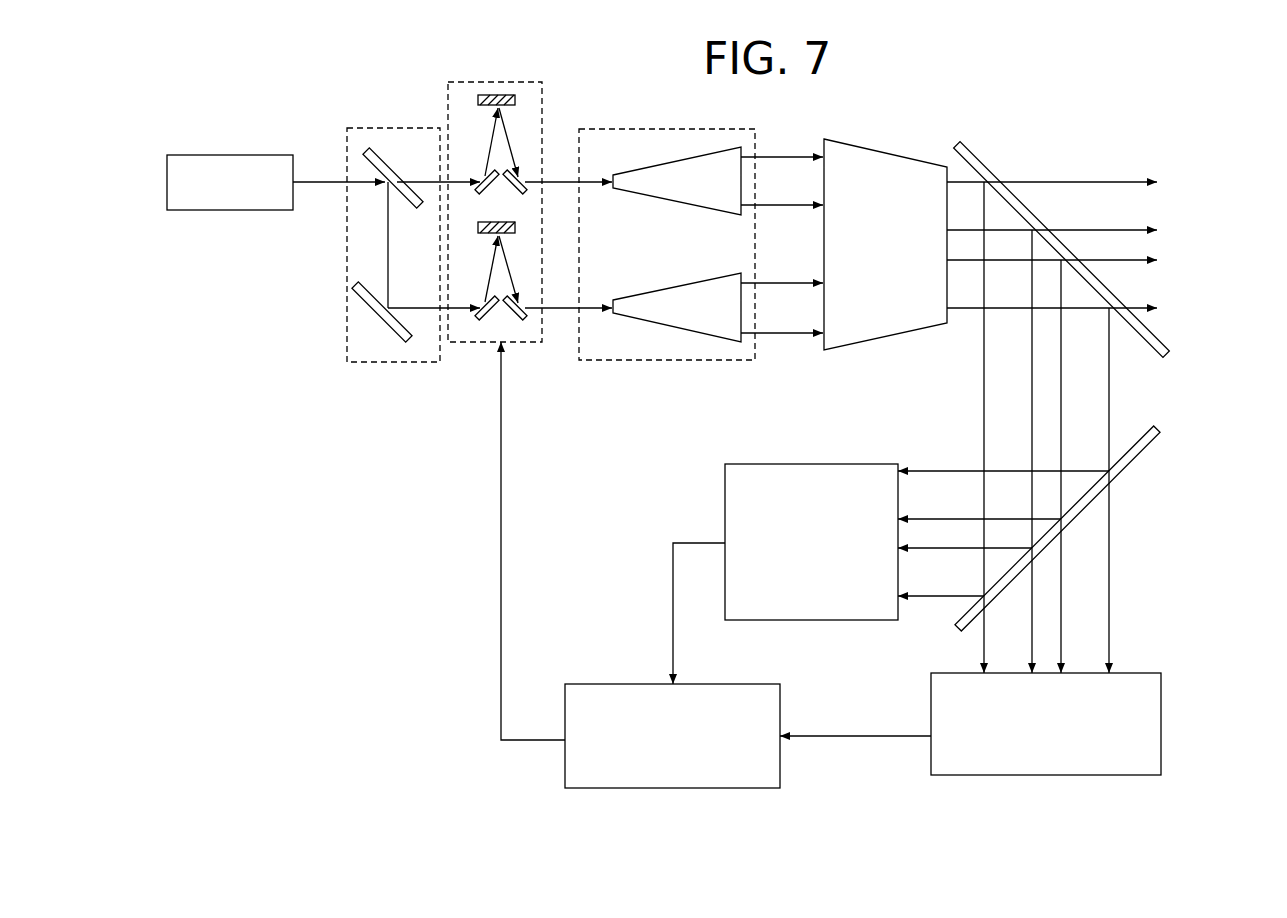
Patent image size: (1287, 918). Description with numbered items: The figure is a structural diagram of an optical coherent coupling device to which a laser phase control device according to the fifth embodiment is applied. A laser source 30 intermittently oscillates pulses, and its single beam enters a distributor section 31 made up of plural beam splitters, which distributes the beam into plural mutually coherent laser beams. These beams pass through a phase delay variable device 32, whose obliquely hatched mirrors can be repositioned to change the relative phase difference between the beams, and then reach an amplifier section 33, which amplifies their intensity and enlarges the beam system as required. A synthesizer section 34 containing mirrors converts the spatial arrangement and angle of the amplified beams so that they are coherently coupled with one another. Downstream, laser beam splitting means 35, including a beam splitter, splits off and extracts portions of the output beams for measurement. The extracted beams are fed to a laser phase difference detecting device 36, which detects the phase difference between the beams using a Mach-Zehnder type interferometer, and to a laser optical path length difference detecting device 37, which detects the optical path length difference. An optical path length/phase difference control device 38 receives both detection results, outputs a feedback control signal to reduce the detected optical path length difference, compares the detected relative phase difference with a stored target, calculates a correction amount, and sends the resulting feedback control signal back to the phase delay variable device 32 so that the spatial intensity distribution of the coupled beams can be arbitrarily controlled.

The laser source 30 is at (188, 155).
The distributor section 31 is at (344, 142).
The phase delay variable device 32 is at (446, 100).
The amplifier section 33 is at (665, 127).
The synthesizer section 34 is at (877, 148).
The laser beam splitting means 35 is at (983, 155).
The laser phase difference detecting device 36 is at (863, 464).
The laser optical path length difference detecting device 37 is at (1161, 695).
The optical path length/phase difference control device 38 is at (565, 776).